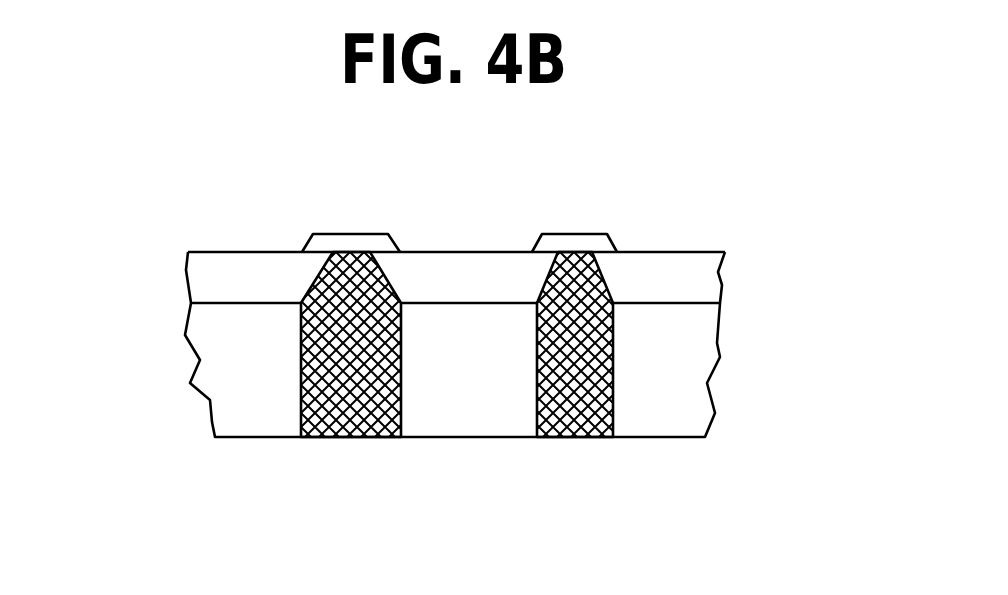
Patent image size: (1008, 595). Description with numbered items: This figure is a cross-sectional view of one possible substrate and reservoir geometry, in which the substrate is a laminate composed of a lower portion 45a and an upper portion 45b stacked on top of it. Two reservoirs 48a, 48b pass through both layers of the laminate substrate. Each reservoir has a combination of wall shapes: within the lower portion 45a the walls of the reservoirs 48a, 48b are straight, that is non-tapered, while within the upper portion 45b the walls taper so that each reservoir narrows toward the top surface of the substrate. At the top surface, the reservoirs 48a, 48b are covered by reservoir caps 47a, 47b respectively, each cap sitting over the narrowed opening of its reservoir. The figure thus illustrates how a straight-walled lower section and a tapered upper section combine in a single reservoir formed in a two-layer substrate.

The lower portion 45a is at (685, 382).
The upper portion 45b is at (205, 280).
The reservoir cap 47a is at (350, 242).
The reservoir cap 47b is at (570, 242).
The reservoir 48a is at (348, 420).
The reservoir 48b is at (575, 417).